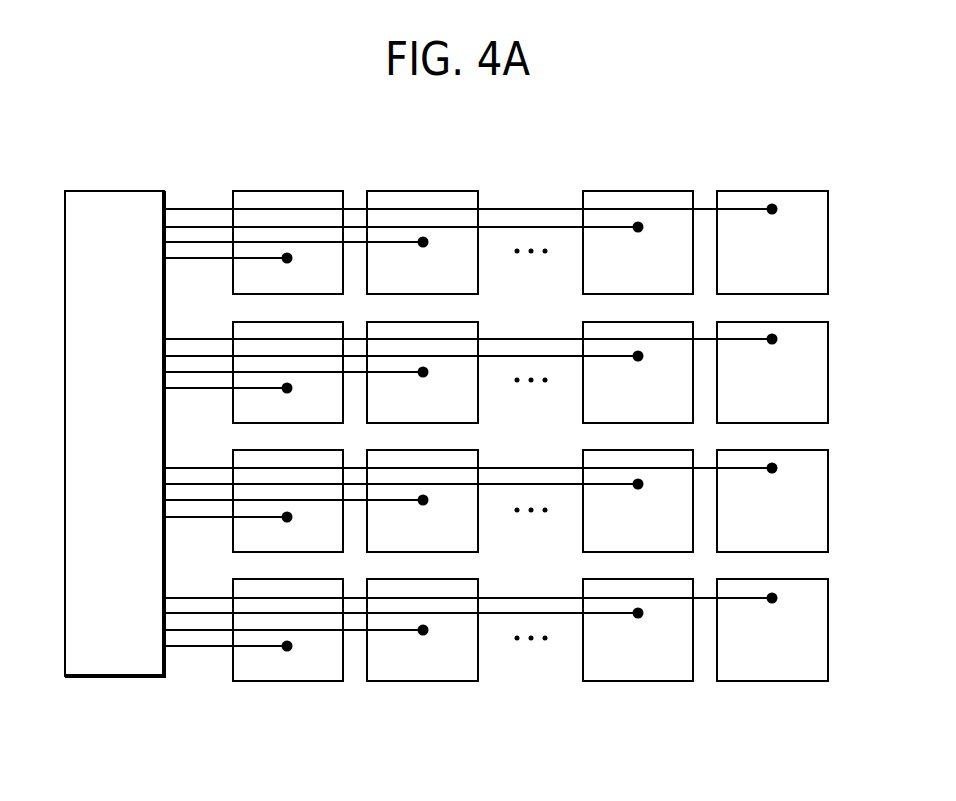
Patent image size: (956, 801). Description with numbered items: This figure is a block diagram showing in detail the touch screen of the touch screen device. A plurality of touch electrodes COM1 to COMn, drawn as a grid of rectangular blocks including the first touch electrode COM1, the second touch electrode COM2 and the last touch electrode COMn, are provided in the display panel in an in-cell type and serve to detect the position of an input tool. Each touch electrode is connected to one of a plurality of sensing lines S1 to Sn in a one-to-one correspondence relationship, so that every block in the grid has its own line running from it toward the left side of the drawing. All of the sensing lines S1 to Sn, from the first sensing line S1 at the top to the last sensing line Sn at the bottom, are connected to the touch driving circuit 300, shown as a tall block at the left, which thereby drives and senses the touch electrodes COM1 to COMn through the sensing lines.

The touch driving circuit 300 is at (77, 190).
The first sensing line S1 is at (194, 208).
The n-th sensing line Sn is at (195, 647).
The first touch electrode COM1 is at (288, 242).
The second touch electrode COM2 is at (422, 242).
The n-th touch electrode COMn is at (772, 630).